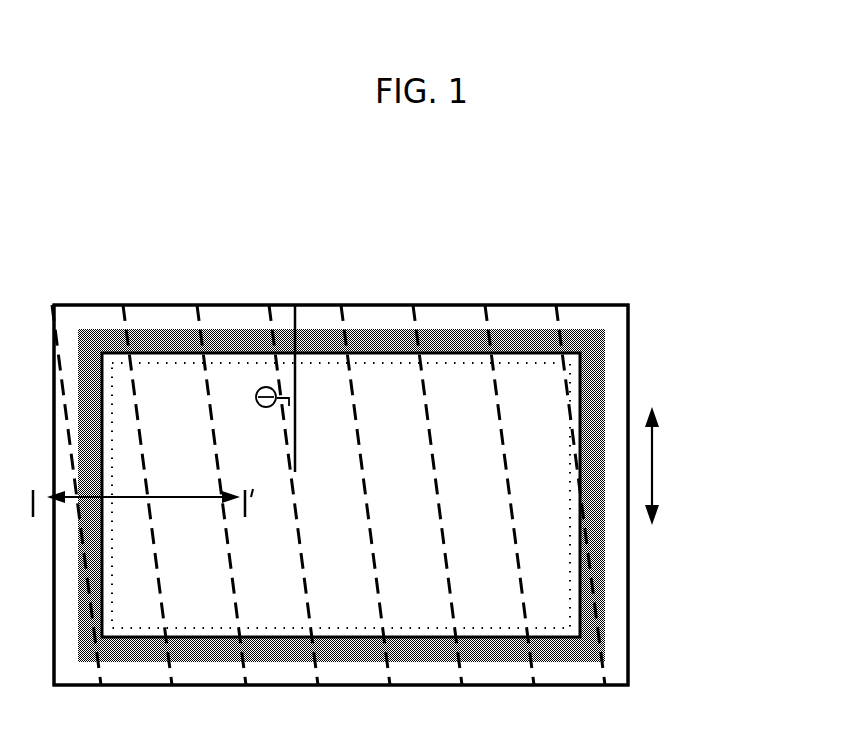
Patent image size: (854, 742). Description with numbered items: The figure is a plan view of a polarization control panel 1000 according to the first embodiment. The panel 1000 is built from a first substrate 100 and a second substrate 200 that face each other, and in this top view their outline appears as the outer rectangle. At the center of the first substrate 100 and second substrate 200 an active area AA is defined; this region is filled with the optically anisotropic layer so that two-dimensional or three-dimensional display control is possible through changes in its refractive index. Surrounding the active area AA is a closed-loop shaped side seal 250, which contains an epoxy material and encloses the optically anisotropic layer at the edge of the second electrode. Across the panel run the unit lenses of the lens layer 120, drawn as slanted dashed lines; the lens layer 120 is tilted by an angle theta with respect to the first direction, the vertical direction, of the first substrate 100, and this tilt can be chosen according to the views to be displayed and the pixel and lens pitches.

The polarization control panel 1000 is at (423, 453).
The first substrate 100 is at (628, 341).
The second substrate 200 is at (628, 341).
The lens layer 120 is at (431, 380).
The side seal 250 is at (566, 650).
The active area AA is at (237, 340).